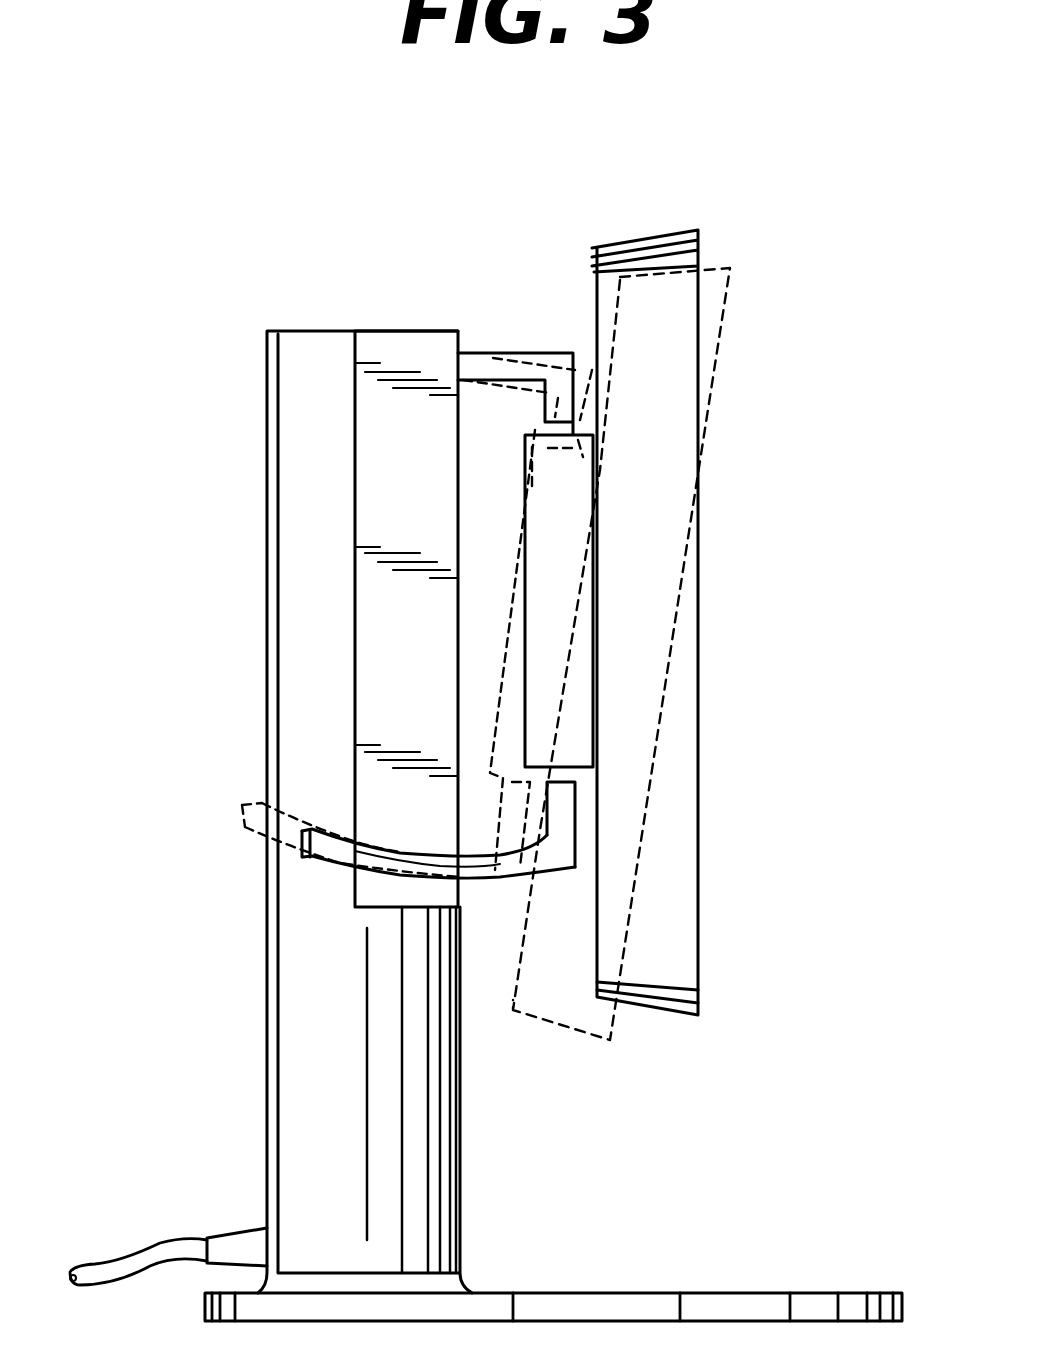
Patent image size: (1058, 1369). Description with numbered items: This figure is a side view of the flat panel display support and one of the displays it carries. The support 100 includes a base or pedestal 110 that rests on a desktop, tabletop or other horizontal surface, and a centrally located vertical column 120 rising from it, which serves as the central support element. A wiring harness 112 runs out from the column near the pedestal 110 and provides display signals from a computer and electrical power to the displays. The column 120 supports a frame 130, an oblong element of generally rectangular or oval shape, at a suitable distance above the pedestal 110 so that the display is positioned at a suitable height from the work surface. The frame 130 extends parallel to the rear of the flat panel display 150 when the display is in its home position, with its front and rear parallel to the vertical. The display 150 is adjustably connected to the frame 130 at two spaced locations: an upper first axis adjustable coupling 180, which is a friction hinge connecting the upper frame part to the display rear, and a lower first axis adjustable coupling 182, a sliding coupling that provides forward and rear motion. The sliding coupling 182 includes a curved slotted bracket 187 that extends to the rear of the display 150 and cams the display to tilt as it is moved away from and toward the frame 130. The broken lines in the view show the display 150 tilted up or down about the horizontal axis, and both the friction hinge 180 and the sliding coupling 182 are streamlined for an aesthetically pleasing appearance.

The support 100 is at (198, 1015).
The base or pedestal 110 is at (572, 1291).
The wiring harness 112 is at (170, 1236).
The vertical column 120 is at (268, 1126).
The frame 130 is at (420, 327).
The flat panel display 150 is at (647, 236).
The upper first axis adjustable coupling 180 is at (512, 423).
The lower first axis adjustable coupling 182 is at (391, 813).
The slotted bracket 187 is at (395, 862).